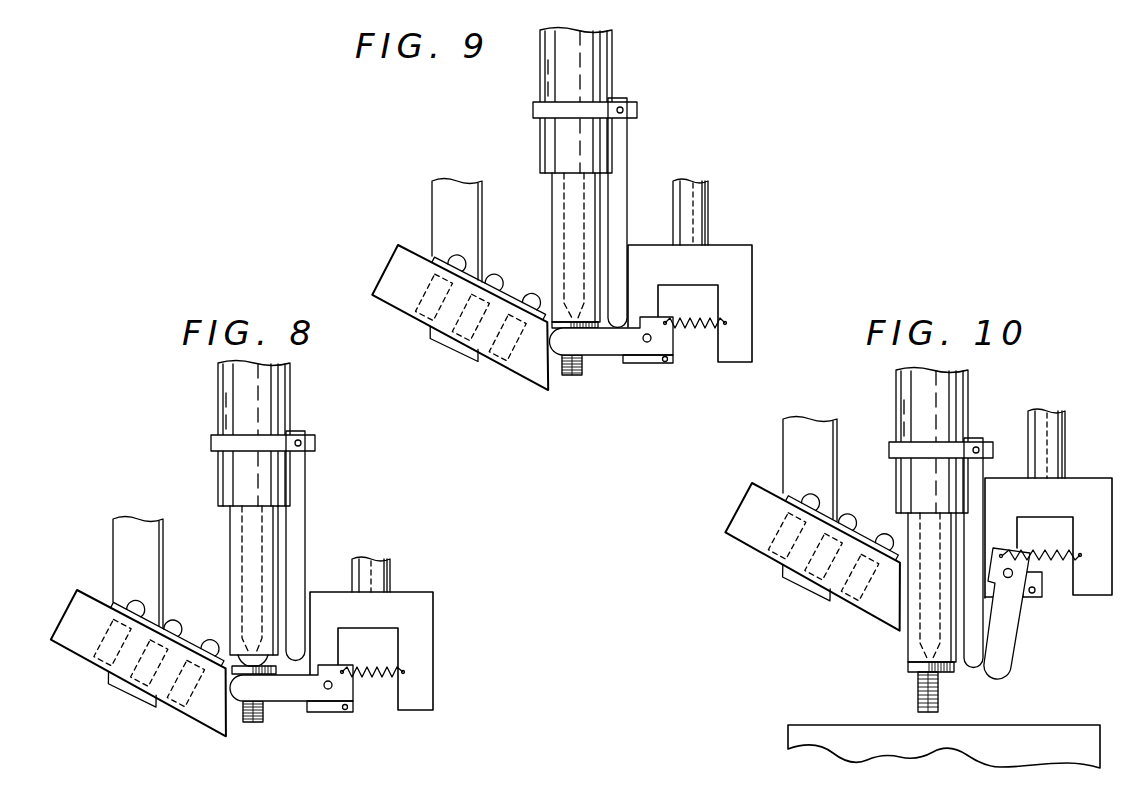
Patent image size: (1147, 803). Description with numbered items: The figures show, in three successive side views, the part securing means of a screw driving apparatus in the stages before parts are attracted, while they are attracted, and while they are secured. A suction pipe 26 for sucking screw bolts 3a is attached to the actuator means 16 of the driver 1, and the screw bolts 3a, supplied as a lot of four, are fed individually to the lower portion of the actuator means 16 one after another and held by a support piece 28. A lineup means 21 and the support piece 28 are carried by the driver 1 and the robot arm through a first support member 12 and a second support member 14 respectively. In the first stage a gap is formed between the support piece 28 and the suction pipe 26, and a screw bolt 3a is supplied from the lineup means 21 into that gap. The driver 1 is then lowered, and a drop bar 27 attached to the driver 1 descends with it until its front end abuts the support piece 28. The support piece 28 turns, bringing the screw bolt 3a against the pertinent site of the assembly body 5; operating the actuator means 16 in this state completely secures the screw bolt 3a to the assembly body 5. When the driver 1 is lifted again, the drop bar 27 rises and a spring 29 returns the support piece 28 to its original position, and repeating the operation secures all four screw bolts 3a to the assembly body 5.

In FIG. 9, the driver 1 is at (540, 70).
In FIG. 8, the driver 1 is at (218, 397).
In FIG. 10, the driver 1 is at (896, 389).
In FIG. 9, the screw bolt 3a is at (442, 254).
In FIG. 8, the screw bolt 3a is at (122, 600).
In FIG. 10, the screw bolt 3a is at (795, 490).
In FIG. 10, the assembly body 5 is at (1057, 730).
In FIG. 9, the first support member 12 is at (432, 198).
In FIG. 8, the first support member 12 is at (113, 538).
In FIG. 10, the first support member 12 is at (783, 437).
In FIG. 9, the second support member 14 is at (708, 215).
In FIG. 8, the second support member 14 is at (390, 577).
In FIG. 10, the second support member 14 is at (1067, 441).
In FIG. 9, the actuator means 16 is at (558, 213).
In FIG. 8, the actuator means 16 is at (232, 545).
In FIG. 10, the actuator means 16 is at (905, 533).
In FIG. 9, the lineup means 21 is at (528, 370).
In FIG. 8, the lineup means 21 is at (78, 647).
In FIG. 10, the lineup means 21 is at (752, 540).
In FIG. 9, the suction pipe 26 is at (552, 250).
In FIG. 8, the suction pipe 26 is at (230, 578).
In FIG. 10, the suction pipe 26 is at (908, 647).
In FIG. 9, the drop bar 27 is at (628, 155).
In FIG. 8, the drop bar 27 is at (306, 518).
In FIG. 10, the drop bar 27 is at (971, 668).
In FIG. 9, the support piece 28 is at (608, 355).
In FIG. 8, the support piece 28 is at (286, 702).
In FIG. 10, the support piece 28 is at (1010, 642).
In FIG. 9, the spring 29 is at (694, 330).
In FIG. 8, the spring 29 is at (372, 680).
In FIG. 10, the spring 29 is at (1062, 570).